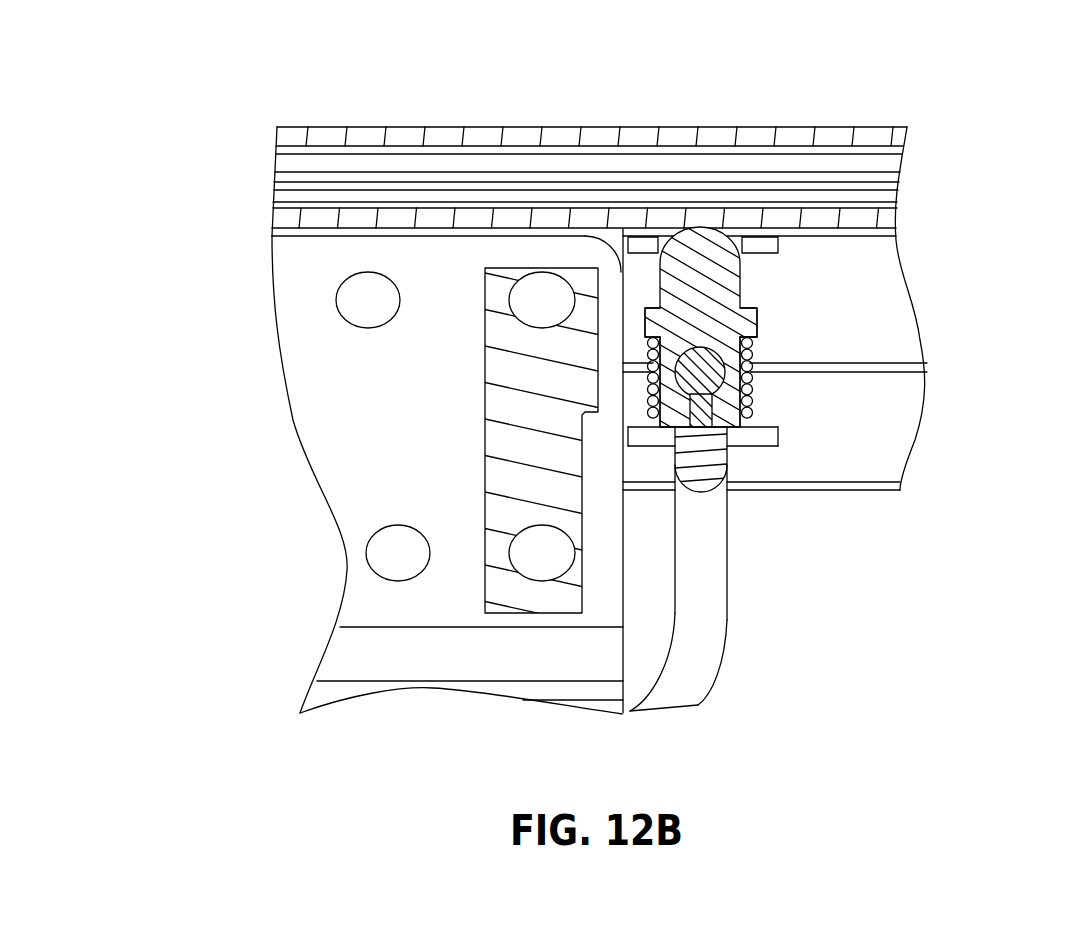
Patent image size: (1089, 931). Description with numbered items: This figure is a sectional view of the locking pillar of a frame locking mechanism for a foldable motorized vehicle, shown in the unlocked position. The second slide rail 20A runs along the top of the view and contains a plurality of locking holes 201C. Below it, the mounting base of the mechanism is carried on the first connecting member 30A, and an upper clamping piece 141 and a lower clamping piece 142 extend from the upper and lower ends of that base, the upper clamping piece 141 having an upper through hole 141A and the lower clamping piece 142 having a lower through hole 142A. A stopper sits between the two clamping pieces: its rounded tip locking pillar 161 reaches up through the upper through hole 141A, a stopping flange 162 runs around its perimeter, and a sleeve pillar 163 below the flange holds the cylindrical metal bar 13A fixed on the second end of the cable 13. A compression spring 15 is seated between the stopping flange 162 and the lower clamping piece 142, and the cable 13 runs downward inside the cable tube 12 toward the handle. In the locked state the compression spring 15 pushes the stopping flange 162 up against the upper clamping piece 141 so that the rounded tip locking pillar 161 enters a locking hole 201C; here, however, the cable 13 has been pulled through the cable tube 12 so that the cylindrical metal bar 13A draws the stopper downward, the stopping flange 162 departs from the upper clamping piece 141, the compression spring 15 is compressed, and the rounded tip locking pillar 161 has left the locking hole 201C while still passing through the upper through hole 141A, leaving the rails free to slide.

The second slide rail 20A is at (443, 155).
The locking hole 201C is at (682, 220).
The first connecting member 30A is at (340, 383).
The upper clamping piece 141 is at (835, 139).
The upper through hole 141A is at (737, 237).
The rounded tip locking pillar 161 is at (846, 271).
The stopping flange 162 is at (750, 323).
The sleeve pillar 163 is at (750, 342).
The cable 13 is at (700, 408).
The cylindrical metal bar 13A is at (710, 375).
The compression spring 15 is at (752, 386).
The lower clamping piece 142 is at (770, 433).
The lower through hole 142A is at (727, 440).
The cable tube 12 is at (746, 580).